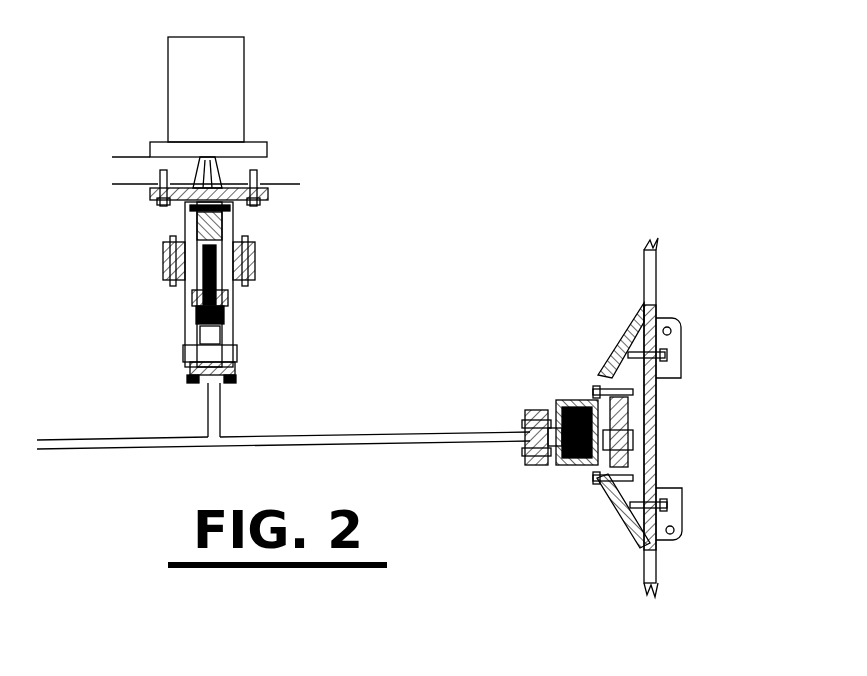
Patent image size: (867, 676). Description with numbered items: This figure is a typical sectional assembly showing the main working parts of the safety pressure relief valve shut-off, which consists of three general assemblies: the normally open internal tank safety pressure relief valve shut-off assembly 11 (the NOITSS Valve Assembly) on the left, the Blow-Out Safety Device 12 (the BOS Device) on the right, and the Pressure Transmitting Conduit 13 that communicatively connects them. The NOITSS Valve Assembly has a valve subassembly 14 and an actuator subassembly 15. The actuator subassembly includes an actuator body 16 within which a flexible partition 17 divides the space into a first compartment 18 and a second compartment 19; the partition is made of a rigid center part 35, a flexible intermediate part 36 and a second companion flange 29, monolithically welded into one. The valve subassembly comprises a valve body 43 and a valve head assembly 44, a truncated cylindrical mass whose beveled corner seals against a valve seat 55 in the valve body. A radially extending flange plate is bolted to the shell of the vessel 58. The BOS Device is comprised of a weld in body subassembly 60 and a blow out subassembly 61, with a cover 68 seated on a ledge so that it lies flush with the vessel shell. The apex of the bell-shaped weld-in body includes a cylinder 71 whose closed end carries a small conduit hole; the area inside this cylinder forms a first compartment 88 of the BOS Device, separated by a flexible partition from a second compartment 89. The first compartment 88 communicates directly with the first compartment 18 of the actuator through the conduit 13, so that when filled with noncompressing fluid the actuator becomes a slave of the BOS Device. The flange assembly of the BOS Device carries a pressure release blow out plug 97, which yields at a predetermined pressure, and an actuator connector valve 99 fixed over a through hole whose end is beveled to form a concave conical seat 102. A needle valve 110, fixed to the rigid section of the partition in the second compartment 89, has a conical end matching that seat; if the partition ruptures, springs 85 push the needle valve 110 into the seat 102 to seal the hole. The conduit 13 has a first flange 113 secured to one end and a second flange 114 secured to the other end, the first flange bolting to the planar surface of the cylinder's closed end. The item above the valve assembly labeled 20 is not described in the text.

The Normally Open Internal Tank Safety Pressure Relief Valve Shut-off Assembly 11 is at (170, 342).
The Blow-Out Safety Device 12 is at (690, 365).
The Pressure Transmitting Conduit 13 is at (283, 455).
The valve subassembly 14 is at (312, 220).
The actuator subassembly 15 is at (312, 309).
The actuator body 16 is at (240, 322).
The flexible partition 17 is at (302, 343).
The first compartment 18 is at (228, 312).
The second compartment 19 is at (253, 292).
The motor 20 is at (315, 97).
The second companion flange 29 is at (256, 257).
The rigid center part 35 is at (296, 380).
The flexible intermediate part 36 is at (234, 336).
The valve body 43 is at (230, 236).
The valve head assembly 44 is at (229, 227).
The valve seat 55 is at (232, 183).
The shell of the vessel 58 is at (237, 165).
The weld in body subassembly 60 is at (595, 332).
The blow out subassembly 61 is at (571, 399).
The cover 68 is at (577, 340).
The cylinder 71 is at (571, 419).
The springs 85 is at (554, 421).
The first compartment 88 is at (527, 459).
The second compartment 89 is at (550, 466).
The pressure release blow out plug 97 is at (580, 518).
The actuator connector valve 99 is at (596, 536).
The concave conical seat 102 is at (556, 502).
The needle valve 110 is at (552, 472).
The first flange 113 is at (507, 417).
The second flange 114 is at (269, 410).